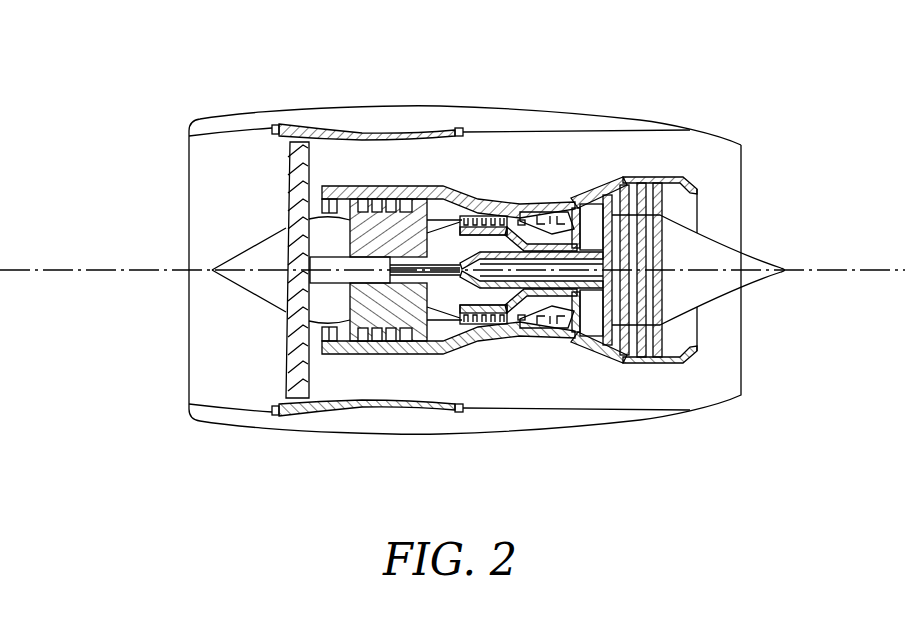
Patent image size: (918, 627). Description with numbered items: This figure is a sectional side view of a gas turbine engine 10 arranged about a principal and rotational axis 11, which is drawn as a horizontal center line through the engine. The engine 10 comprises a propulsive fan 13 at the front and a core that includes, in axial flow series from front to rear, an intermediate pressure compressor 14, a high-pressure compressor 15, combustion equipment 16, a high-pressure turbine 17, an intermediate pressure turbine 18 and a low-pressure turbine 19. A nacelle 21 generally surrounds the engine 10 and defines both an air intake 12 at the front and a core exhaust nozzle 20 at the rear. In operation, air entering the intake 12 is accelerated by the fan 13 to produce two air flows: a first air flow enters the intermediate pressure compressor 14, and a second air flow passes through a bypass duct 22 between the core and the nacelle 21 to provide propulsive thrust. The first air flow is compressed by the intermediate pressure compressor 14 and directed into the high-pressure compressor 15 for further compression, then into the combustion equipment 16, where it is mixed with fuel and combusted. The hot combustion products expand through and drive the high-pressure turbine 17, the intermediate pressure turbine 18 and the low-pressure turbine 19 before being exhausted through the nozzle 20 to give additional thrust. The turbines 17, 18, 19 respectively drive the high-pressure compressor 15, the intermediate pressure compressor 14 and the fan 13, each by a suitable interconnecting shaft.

The gas turbine engine 10 is at (150, 168).
The principal and rotational axis 11 is at (172, 268).
The air intake 12 is at (240, 137).
The propulsive fan 13 is at (292, 360).
The intermediate pressure compressor 14 is at (388, 350).
The high-pressure compressor 15 is at (481, 208).
The combustion equipment 16 is at (547, 322).
The high-pressure turbine 17 is at (578, 335).
The intermediate pressure turbine 18 is at (608, 192).
The low-pressure turbine 19 is at (625, 340).
The core exhaust nozzle 20 is at (741, 383).
The nacelle 21 is at (610, 112).
The bypass duct 22 is at (433, 173).